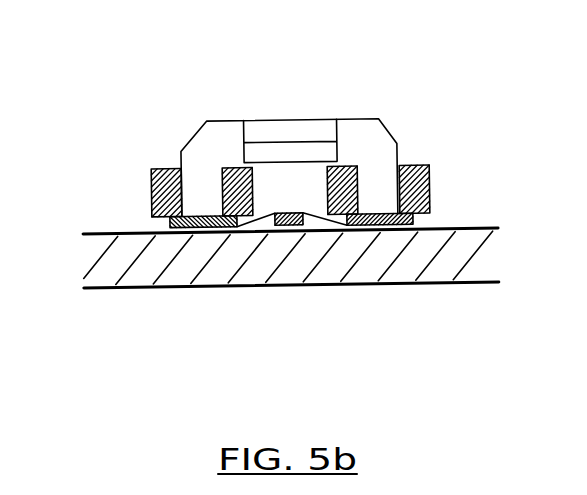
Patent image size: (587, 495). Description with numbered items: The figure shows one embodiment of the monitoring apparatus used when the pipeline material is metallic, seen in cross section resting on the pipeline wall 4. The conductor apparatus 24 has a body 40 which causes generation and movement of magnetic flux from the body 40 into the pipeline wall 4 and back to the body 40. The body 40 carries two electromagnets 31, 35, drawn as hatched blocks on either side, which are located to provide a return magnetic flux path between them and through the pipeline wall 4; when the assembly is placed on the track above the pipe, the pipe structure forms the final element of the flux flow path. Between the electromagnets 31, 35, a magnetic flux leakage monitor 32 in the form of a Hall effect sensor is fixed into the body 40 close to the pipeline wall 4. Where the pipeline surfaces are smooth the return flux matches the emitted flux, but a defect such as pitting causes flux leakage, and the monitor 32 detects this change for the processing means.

The pipeline wall 4 is at (468, 270).
The body 40 is at (210, 109).
The conductor apparatus 24 is at (296, 116).
The electromagnet 31 is at (148, 173).
The electromagnet 35 is at (426, 175).
The magnetic flux leakage monitor 32 is at (293, 208).